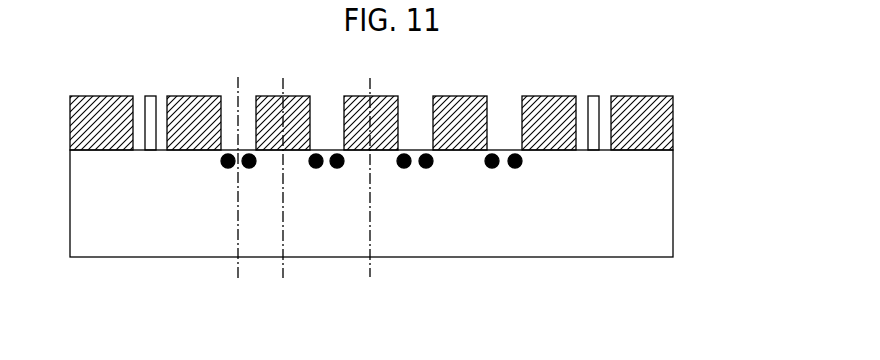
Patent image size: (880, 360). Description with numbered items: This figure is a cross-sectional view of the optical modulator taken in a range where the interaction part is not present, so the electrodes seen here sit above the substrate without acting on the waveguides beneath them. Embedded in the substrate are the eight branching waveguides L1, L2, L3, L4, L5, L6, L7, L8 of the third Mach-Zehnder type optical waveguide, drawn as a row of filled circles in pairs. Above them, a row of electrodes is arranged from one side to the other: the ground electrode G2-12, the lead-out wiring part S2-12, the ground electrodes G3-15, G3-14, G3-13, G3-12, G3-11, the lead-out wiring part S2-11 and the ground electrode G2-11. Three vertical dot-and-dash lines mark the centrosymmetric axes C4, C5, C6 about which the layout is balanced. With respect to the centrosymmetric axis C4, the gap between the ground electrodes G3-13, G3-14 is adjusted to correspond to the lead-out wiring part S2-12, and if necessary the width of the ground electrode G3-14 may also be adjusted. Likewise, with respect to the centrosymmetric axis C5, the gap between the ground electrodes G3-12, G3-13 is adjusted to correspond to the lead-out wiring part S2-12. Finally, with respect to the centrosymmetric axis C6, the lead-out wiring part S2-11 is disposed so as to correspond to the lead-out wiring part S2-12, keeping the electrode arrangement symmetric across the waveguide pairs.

The ground electrode G2-12 is at (100, 103).
The lead-out wiring part S2-12 is at (152, 93).
The ground electrode G3-15 is at (193, 105).
The ground electrode G3-14 is at (283, 107).
The ground electrode G3-13 is at (383, 107).
The ground electrode G3-12 is at (462, 103).
The ground electrode G3-11 is at (565, 103).
The lead-out wiring part S2-11 is at (598, 107).
The ground electrode G2-11 is at (656, 107).
The centrosymmetric axis C4 is at (238, 191).
The centrosymmetric axis C5 is at (284, 191).
The centrosymmetric axis C6 is at (375, 191).
The branching waveguide L1 is at (221, 168).
The branching waveguide L2 is at (256, 168).
The branching waveguide L3 is at (309, 168).
The branching waveguide L4 is at (344, 168).
The branching waveguide L5 is at (398, 168).
The branching waveguide L6 is at (431, 168).
The branching waveguide L7 is at (487, 168).
The branching waveguide L8 is at (520, 168).